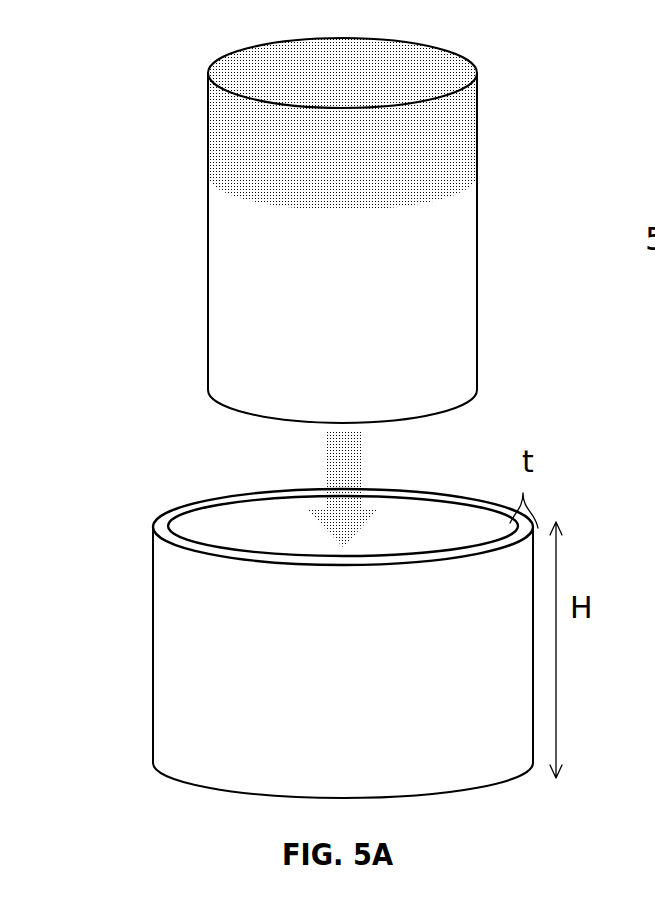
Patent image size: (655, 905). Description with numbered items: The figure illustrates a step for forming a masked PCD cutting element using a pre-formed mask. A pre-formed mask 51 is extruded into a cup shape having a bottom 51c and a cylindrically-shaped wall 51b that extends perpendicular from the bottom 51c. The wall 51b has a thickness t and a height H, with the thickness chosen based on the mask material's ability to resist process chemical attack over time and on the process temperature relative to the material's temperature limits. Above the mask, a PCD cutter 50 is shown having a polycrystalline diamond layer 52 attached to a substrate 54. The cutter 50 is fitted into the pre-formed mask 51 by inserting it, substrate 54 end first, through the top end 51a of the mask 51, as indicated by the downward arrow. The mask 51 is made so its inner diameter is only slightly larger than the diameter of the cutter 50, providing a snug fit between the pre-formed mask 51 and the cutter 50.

The PCD cutter 50 is at (525, 94).
The pre-formed mask 51 is at (284, 629).
The top end 51a is at (163, 527).
The cylindrically-shaped wall 51b is at (175, 702).
The bottom 51c is at (185, 785).
The polycrystalline diamond layer 52 is at (362, 177).
The substrate 54 is at (360, 322).